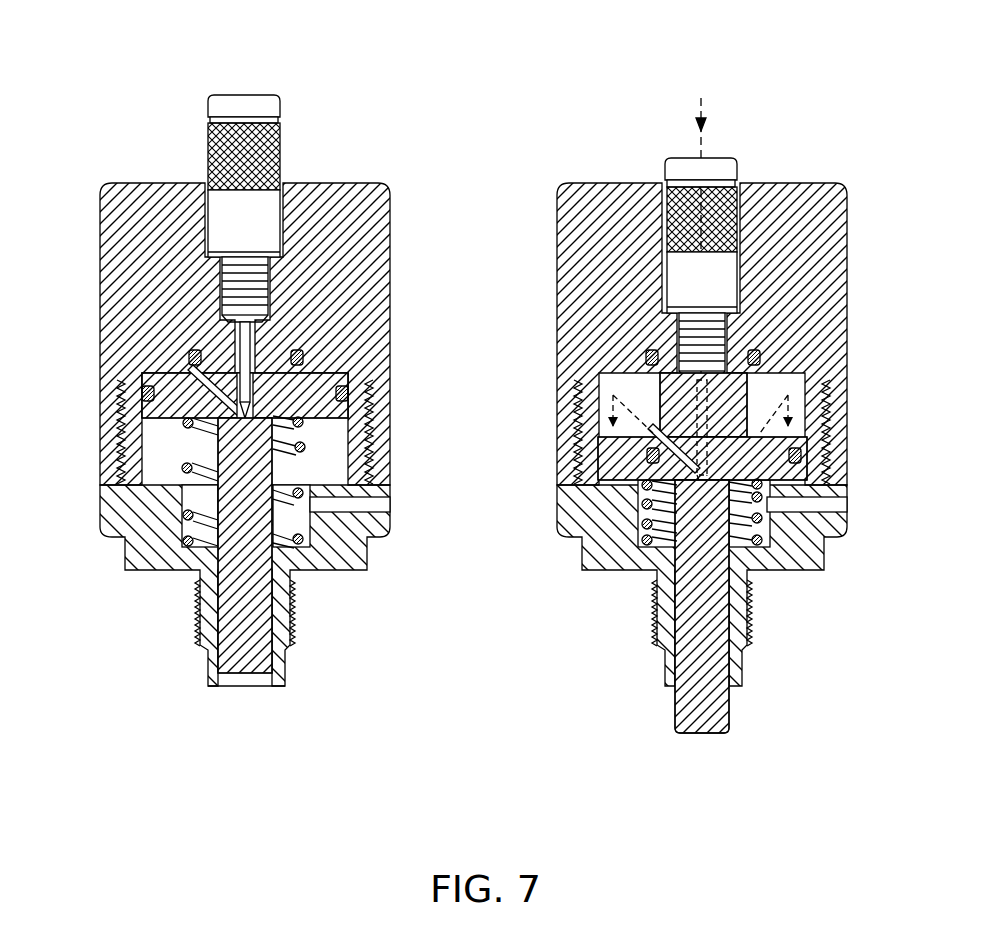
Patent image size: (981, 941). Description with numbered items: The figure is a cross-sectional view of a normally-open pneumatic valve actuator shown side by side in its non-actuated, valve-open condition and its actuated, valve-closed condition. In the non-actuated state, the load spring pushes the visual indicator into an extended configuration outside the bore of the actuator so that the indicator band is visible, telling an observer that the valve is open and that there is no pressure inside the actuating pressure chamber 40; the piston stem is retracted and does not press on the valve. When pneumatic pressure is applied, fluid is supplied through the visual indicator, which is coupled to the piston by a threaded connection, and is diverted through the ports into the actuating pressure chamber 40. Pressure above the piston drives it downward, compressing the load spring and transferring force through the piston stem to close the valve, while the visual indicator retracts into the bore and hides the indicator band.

The actuating pressure chamber 40 is at (790, 385).